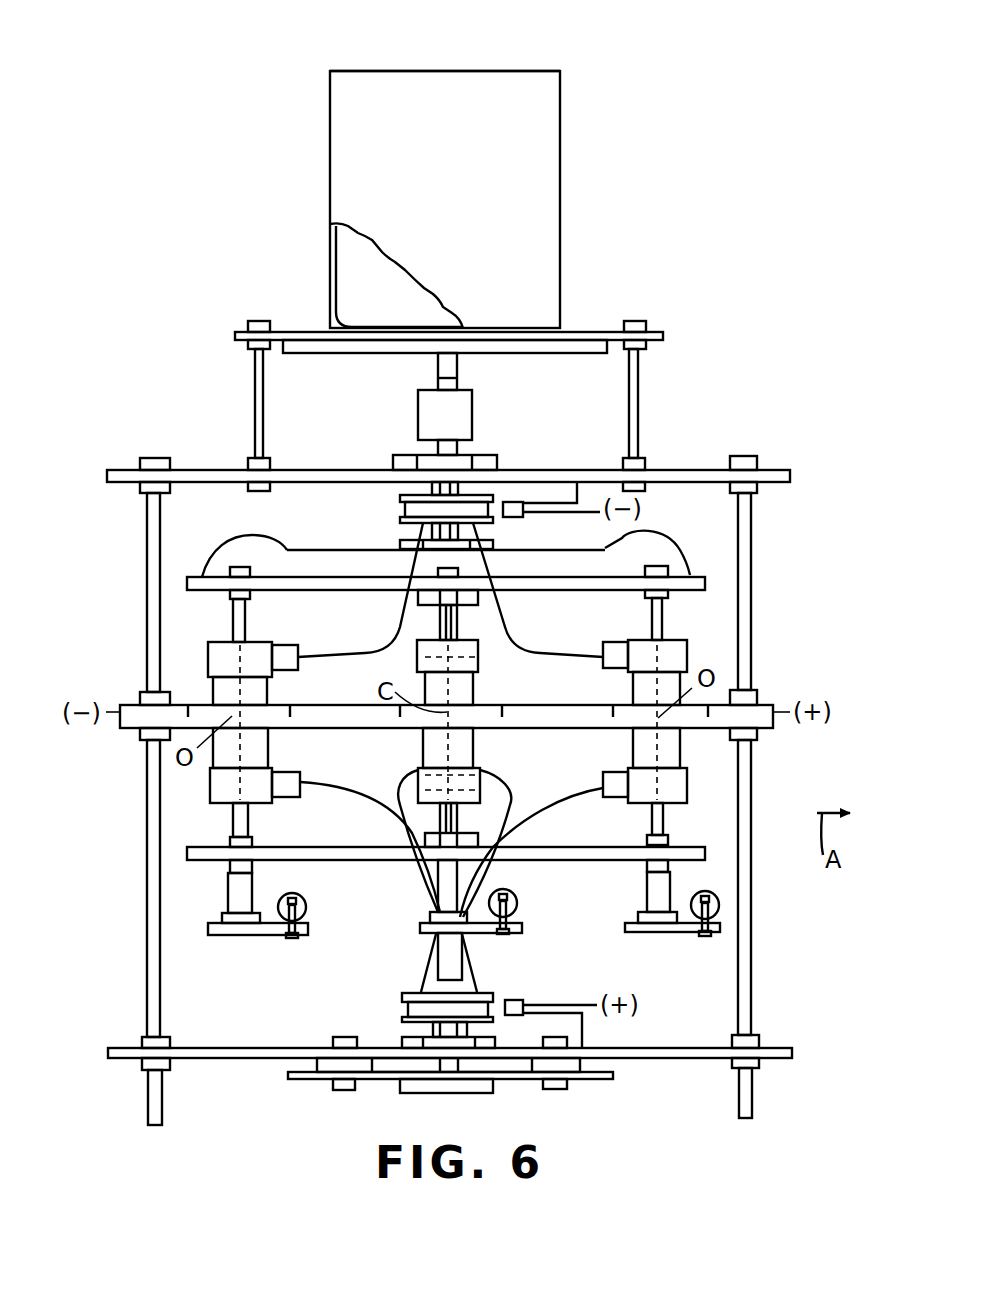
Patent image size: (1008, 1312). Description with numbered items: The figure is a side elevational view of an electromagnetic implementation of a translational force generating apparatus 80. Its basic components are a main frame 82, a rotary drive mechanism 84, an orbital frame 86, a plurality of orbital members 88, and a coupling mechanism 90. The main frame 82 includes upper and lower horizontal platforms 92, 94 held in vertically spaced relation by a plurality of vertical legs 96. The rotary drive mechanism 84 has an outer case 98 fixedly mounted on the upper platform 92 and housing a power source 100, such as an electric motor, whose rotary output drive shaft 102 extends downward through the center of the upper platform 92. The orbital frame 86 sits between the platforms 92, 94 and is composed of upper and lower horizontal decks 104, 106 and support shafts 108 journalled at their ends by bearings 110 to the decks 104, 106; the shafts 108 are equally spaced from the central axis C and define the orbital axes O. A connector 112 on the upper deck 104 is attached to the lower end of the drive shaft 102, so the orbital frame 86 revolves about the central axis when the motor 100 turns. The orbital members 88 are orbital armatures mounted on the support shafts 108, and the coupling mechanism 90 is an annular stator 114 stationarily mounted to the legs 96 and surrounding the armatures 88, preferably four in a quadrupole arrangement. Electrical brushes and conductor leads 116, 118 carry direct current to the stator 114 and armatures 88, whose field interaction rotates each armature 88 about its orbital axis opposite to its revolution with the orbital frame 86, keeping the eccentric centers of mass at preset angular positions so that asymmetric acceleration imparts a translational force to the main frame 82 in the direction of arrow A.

The translational force generating apparatus 80 is at (701, 191).
The main frame 82 is at (663, 466).
The rotary drive mechanism 84 is at (564, 144).
The orbital frame 86 is at (704, 563).
The orbital members 88 is at (270, 918).
The coupling mechanism 90 is at (400, 1047).
The upper horizontal platform 92 is at (213, 468).
The lower horizontal platform 94 is at (200, 1063).
The vertical legs 96 is at (146, 550).
The outer case 98 is at (473, 71).
The power source 100 is at (380, 285).
The rotary output drive shaft 102 is at (458, 448).
The upper horizontal deck 104 is at (641, 556).
The lower horizontal deck 106 is at (580, 846).
The support shafts 108 is at (235, 622).
The bearings 110 is at (231, 600).
The connector 112 is at (498, 460).
The annular stator 114 is at (762, 702).
The electrical brushes 116 is at (513, 517).
The conductor leads 118 is at (410, 827).